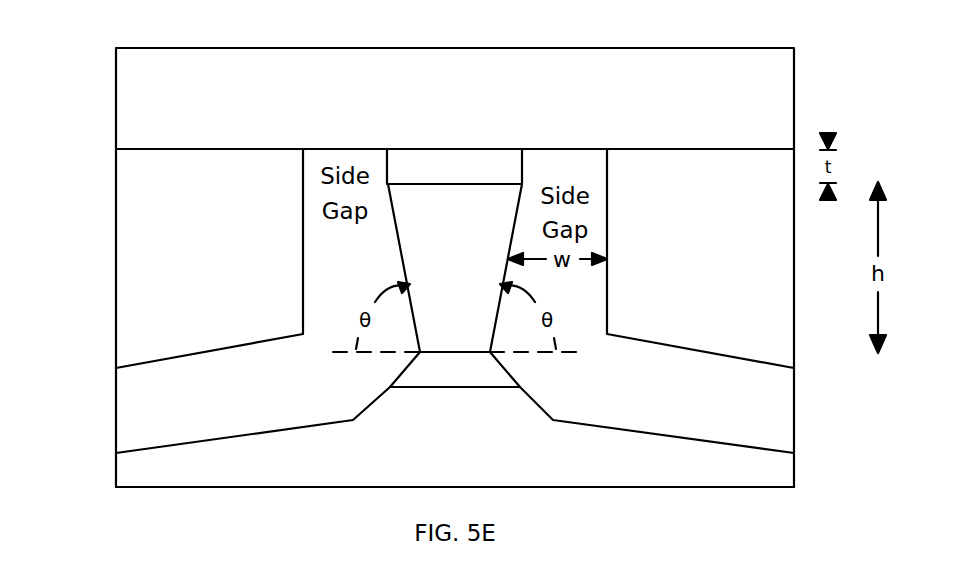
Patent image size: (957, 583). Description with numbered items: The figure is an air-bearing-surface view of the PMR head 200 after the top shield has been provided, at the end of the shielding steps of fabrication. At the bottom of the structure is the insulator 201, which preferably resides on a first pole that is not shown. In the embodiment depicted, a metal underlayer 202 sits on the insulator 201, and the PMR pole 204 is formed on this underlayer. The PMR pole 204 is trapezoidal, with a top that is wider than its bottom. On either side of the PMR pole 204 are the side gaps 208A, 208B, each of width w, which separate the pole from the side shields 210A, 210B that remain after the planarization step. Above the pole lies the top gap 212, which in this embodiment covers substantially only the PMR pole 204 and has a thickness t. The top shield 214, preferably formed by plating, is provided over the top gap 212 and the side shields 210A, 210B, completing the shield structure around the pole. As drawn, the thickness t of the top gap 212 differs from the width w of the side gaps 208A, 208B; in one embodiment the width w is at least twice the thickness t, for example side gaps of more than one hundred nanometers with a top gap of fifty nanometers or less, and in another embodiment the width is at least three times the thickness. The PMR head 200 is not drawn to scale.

The PMR head 200 is at (433, 25).
The insulator 201 is at (794, 475).
The metal underlayer 202 is at (398, 388).
The PMR pole 204 is at (403, 269).
The side gap 208A is at (116, 420).
The side gap 208B is at (796, 420).
The side shield 210A is at (116, 183).
The side shield 210B is at (796, 293).
The top gap 212 is at (506, 149).
The top shield 214 is at (116, 98).